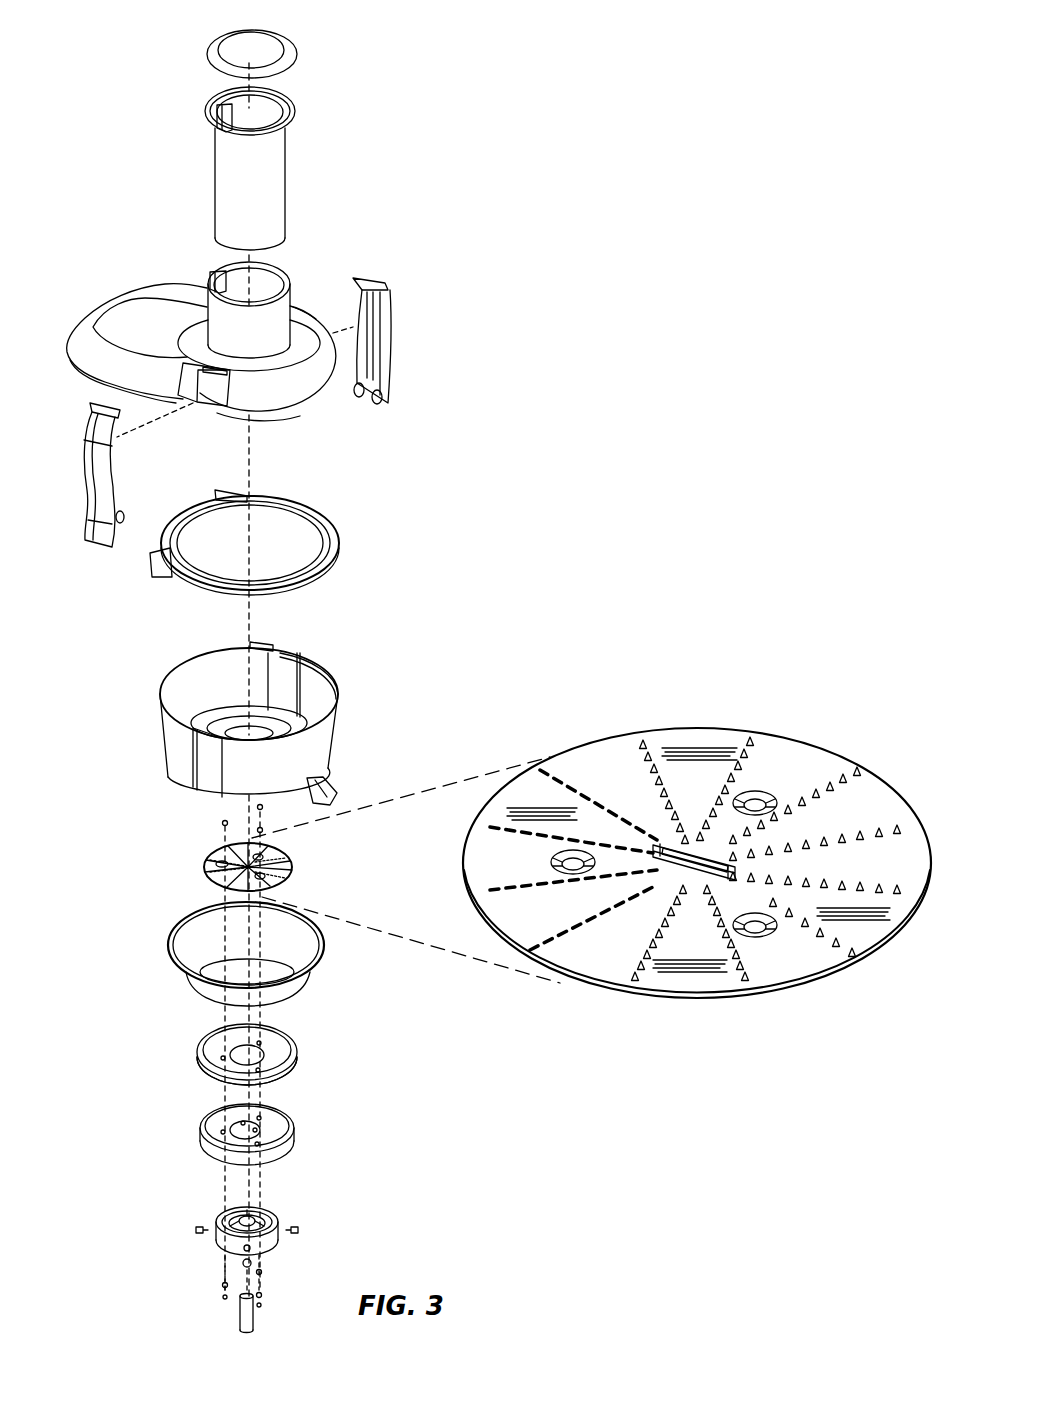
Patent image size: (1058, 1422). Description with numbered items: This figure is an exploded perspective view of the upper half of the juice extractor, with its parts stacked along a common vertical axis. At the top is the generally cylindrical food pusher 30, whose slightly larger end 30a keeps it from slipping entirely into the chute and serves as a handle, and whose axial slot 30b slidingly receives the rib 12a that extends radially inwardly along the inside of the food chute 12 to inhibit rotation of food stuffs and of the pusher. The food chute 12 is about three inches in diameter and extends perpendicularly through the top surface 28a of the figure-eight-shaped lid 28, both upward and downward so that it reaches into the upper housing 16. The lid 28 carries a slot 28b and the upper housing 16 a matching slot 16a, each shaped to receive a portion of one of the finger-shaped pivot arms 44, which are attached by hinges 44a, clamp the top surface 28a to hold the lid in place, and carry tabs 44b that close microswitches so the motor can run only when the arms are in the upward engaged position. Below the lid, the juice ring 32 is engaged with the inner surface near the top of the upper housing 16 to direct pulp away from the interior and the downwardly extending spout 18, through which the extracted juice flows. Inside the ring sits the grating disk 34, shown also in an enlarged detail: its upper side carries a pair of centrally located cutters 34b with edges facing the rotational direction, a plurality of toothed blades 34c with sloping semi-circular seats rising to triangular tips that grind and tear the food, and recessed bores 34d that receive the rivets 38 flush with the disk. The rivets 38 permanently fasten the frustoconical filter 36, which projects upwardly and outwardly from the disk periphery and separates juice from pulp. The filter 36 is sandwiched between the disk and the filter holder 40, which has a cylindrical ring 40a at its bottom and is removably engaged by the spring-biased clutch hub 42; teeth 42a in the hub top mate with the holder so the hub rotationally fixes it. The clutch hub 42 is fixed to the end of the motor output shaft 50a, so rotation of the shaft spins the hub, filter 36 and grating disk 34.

The food chute 12 is at (300, 325).
The rib 12a is at (226, 275).
The upper housing 16 is at (333, 733).
The slot 16a is at (287, 683).
The spout 18 is at (330, 783).
The lid 28 is at (113, 315).
The top surface 28a is at (295, 304).
The slot 28b is at (207, 395).
The food pusher 30 is at (290, 172).
The larger end 30a is at (291, 40).
The slot 30b is at (222, 105).
The juice ring 32 is at (337, 553).
The grating disk 34 is at (203, 863).
The cutters 34b is at (673, 860).
The toothed blades 34c is at (660, 790).
The recessed bores 34d is at (757, 803).
The filter 36 is at (170, 942).
The rivets 38 is at (220, 822).
The filter holder 40 is at (318, 1023).
The cylindrical ring 40a is at (233, 1170).
The clutch hub 42 is at (220, 1238).
The teeth 42a is at (225, 1218).
The pivot arm 44 is at (390, 340).
The hinge 44a is at (352, 395).
The tab 44b is at (378, 404).
The output shaft 50a is at (238, 1313).